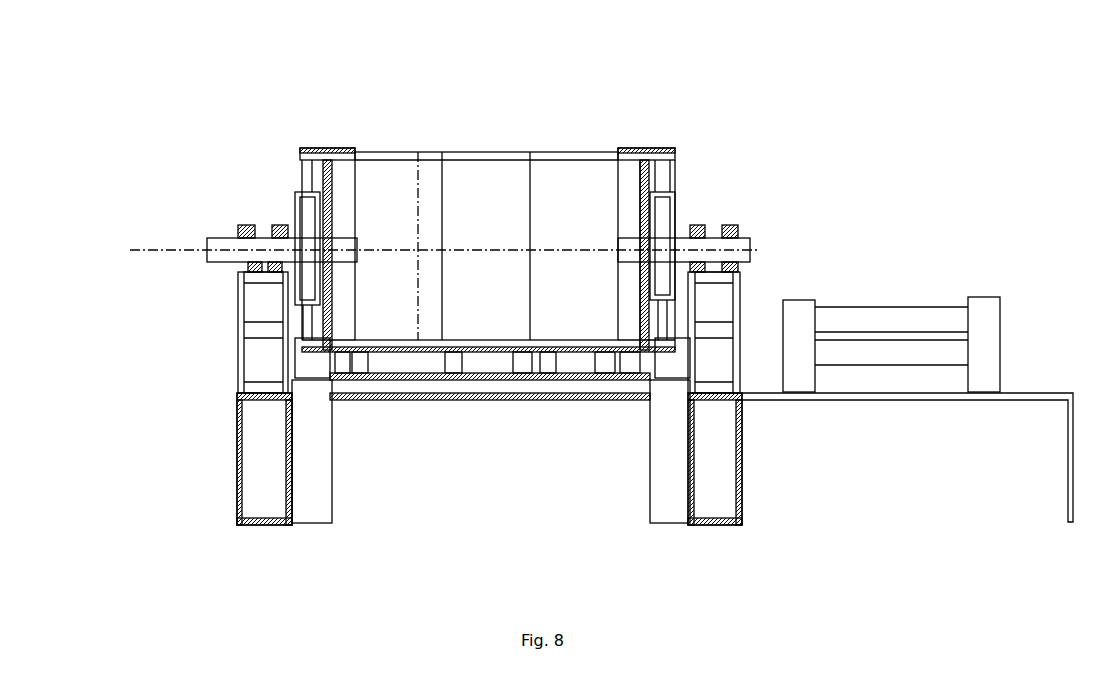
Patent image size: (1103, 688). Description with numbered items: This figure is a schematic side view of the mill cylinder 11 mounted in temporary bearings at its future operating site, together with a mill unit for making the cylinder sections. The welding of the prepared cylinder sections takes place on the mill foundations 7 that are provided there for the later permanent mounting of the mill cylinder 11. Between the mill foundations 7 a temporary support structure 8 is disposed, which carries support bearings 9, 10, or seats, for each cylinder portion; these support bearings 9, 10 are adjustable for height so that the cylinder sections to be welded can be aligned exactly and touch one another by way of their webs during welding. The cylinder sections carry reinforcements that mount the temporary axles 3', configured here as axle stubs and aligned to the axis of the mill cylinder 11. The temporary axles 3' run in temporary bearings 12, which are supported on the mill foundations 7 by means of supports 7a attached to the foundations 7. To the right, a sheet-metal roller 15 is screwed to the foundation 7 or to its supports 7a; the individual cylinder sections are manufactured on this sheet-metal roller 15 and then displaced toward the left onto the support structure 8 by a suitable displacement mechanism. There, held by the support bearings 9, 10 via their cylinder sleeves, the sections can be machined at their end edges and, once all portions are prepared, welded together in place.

The mill cylinder 11 is at (533, 120).
The temporary axle 3' is at (484, 223).
The temporary bearing 12 is at (244, 318).
The support bearing 9 is at (456, 375).
The support bearing 10 is at (521, 375).
The temporary support structure 8 is at (577, 392).
The mill foundation 7 is at (325, 466).
The support 7a is at (270, 505).
The sheet-metal roller 15 is at (985, 308).